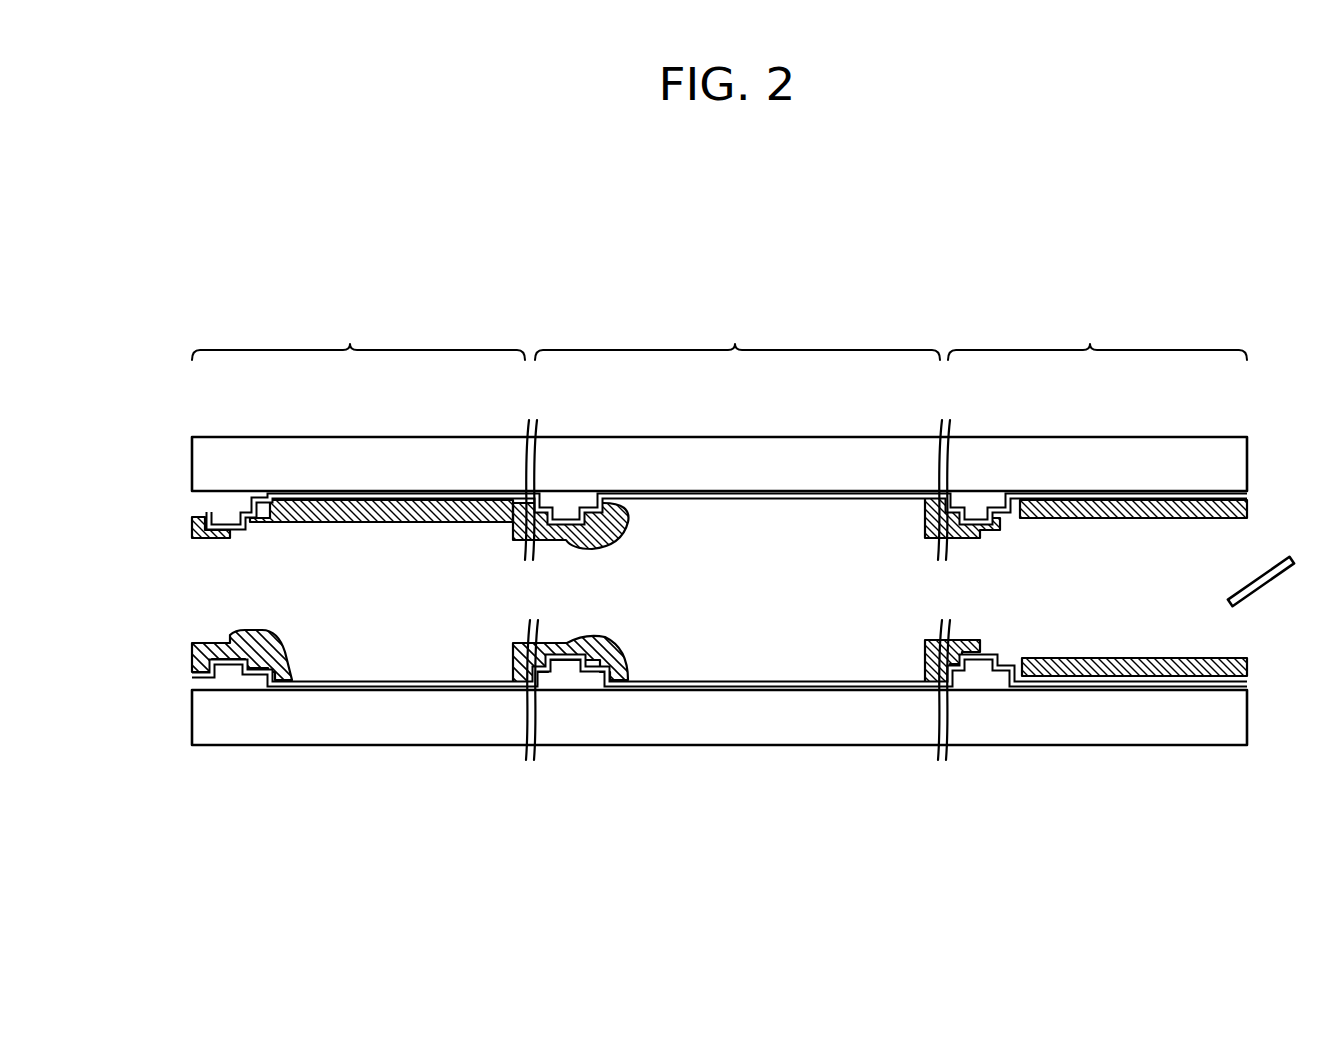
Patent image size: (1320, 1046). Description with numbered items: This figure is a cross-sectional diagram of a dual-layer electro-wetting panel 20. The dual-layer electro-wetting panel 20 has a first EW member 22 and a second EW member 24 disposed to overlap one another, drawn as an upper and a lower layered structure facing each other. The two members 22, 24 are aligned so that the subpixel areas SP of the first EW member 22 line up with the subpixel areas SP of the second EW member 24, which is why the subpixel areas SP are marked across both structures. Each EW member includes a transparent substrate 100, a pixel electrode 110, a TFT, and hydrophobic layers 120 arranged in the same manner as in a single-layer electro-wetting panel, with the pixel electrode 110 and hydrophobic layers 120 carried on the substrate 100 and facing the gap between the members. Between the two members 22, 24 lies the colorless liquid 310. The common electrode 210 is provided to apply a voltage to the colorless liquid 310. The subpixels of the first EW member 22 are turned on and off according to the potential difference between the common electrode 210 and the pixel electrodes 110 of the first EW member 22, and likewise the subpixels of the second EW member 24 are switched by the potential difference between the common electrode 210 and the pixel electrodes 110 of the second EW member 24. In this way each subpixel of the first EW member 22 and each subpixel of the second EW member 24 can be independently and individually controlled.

The dual-layer electro-wetting panel 20 is at (695, 537).
The first EW member 22 is at (695, 598).
The second EW member 24 is at (180, 637).
The substrate 100 is at (250, 453).
The pixel electrode 110 is at (466, 490).
The hydrophobic layer 120 is at (381, 497).
The colorless liquid 310 is at (765, 596).
The common electrode 210 is at (1262, 588).
The subpixel area SP is at (543, 320).